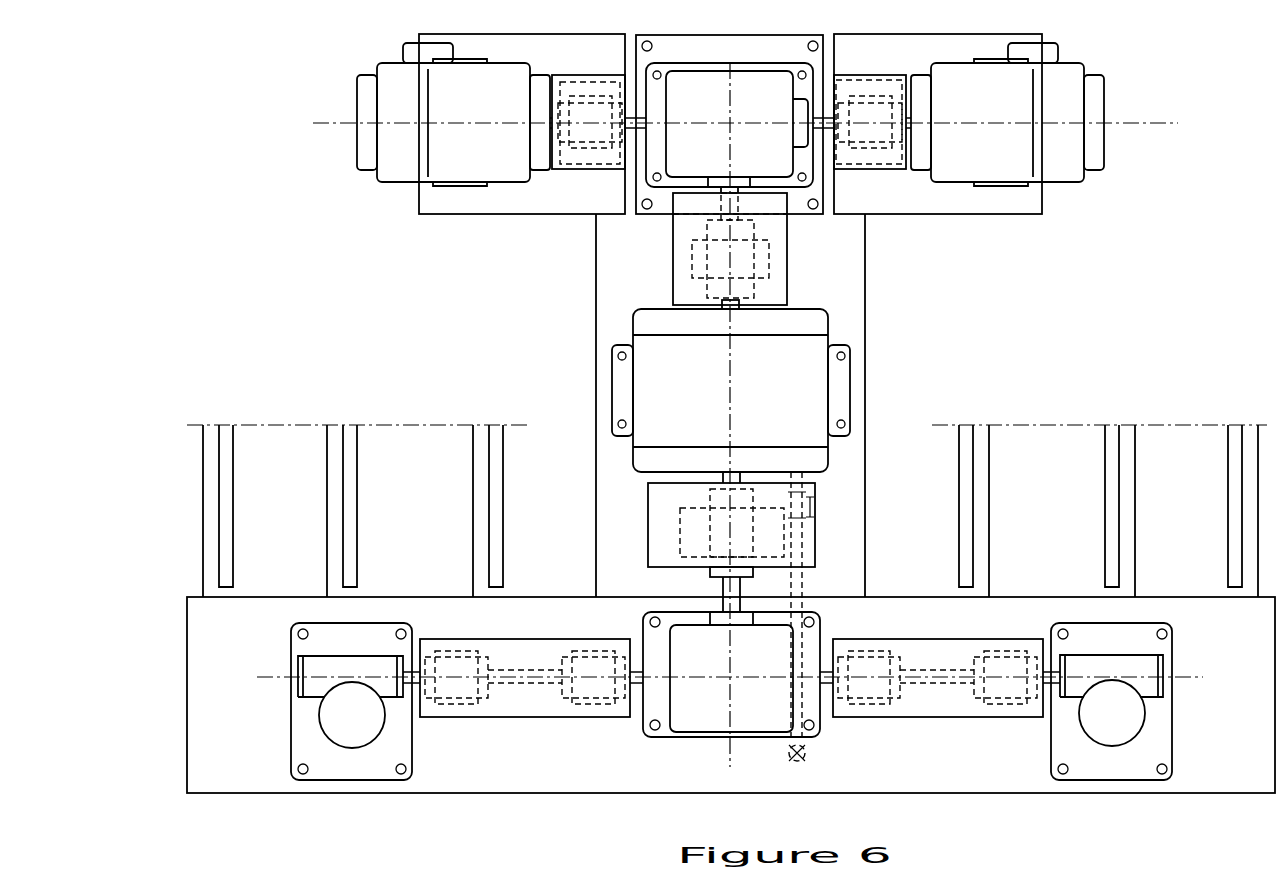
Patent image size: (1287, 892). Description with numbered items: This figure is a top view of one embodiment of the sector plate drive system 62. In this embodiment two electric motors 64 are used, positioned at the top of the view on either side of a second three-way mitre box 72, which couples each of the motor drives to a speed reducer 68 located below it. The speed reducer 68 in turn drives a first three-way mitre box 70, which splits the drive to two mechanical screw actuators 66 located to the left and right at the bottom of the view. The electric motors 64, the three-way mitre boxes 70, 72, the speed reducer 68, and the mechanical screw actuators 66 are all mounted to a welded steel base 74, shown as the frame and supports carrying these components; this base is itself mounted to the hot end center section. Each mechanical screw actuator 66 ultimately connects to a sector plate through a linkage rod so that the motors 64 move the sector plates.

The sector plate drive system 62 is at (266, 100).
The electric motor 64 is at (365, 147).
The mechanical screw actuator 66 is at (358, 768).
The speed reducer 68 is at (773, 401).
The first 3-way mitre box 70 is at (708, 712).
The second 3-way mitre box 72 is at (780, 135).
The welded steel base 74 is at (847, 310).